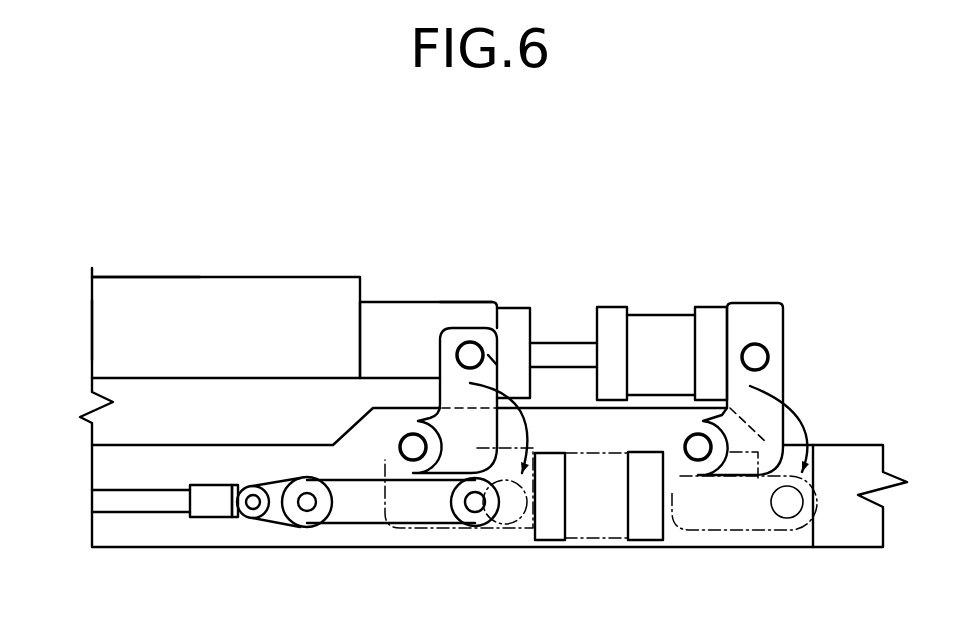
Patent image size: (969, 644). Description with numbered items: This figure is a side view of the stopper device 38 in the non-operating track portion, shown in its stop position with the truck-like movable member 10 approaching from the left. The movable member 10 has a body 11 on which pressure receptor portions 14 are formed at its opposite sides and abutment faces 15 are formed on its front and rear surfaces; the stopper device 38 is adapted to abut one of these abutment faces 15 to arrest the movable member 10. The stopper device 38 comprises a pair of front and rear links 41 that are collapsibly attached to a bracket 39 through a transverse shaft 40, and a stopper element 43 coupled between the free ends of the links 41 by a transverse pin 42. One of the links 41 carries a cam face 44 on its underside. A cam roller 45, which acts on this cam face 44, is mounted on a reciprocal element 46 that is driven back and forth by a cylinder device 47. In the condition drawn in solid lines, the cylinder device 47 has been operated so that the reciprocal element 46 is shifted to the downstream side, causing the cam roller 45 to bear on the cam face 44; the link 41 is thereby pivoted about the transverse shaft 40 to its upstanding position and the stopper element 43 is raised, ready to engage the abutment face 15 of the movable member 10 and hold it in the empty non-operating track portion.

The movable member 10 is at (207, 277).
The body 11 is at (135, 277).
The pressure receptor portion 14 is at (135, 343).
The abutment face 15 is at (363, 297).
The stopper device 38 is at (678, 293).
The bracket 39 is at (410, 410).
The transverse shaft 40 is at (413, 455).
The link 41 is at (488, 360).
The transverse pin 42 is at (470, 345).
The stopper element 43 is at (450, 303).
The cam face 44 is at (437, 525).
The cam roller 45 is at (483, 520).
The reciprocal element 46 is at (342, 517).
The cylinder device 47 is at (145, 508).